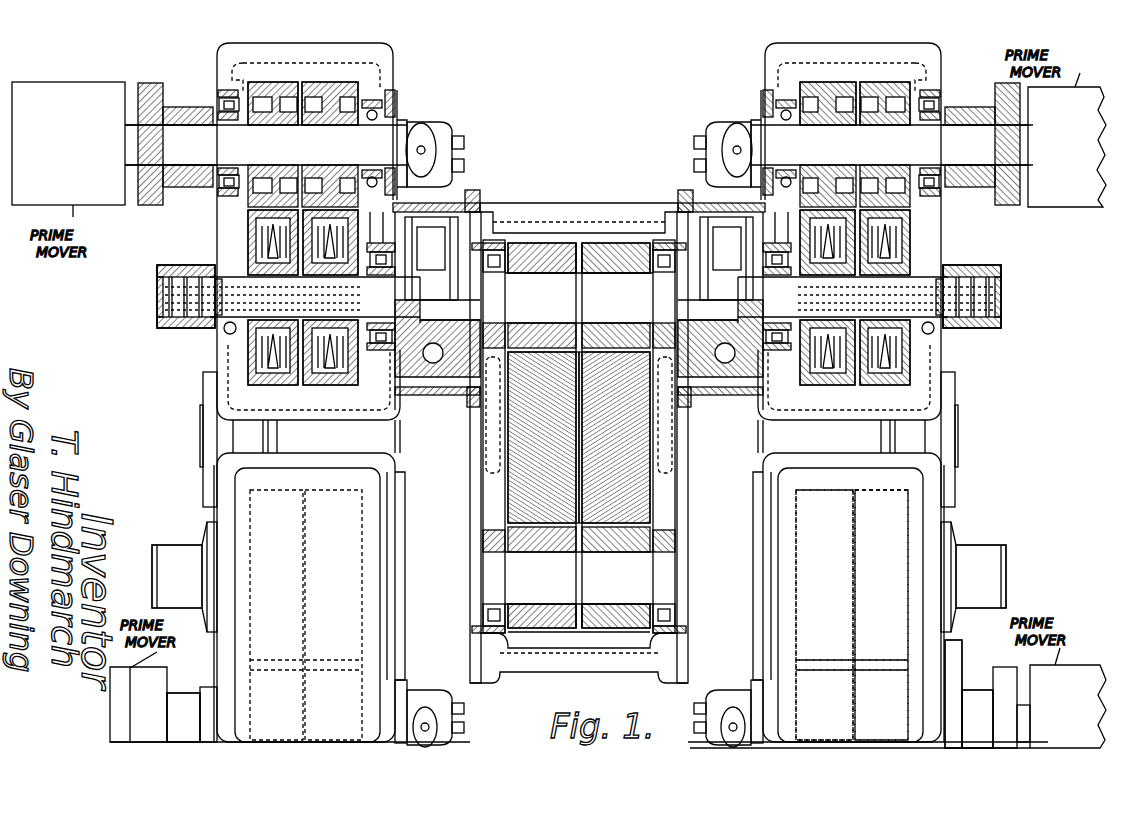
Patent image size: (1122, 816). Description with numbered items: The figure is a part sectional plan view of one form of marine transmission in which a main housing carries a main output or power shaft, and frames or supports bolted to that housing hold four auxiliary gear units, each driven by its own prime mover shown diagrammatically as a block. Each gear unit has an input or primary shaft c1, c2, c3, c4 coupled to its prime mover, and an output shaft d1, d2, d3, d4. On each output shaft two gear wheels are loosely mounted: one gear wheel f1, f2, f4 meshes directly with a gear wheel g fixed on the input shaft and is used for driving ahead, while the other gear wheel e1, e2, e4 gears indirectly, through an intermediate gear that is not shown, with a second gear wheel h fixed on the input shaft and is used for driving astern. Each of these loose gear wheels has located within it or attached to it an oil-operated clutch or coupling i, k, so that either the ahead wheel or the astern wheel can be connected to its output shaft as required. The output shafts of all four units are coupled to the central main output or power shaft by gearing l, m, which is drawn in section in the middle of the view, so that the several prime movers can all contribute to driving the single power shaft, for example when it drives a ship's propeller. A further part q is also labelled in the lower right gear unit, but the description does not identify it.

The second gear wheel h is at (263, 83).
The input or primary shaft c1 is at (182, 135).
The gear wheel g is at (345, 78).
The oil-operated clutch or coupling i is at (260, 237).
The oil-operated clutch or coupling k is at (350, 230).
The output shaft d1 is at (228, 322).
The gear wheel e1 is at (288, 383).
The gear wheel f1 is at (347, 390).
The output shaft d4 is at (172, 557).
The input or primary shaft c4 is at (178, 702).
The gearing l is at (593, 243).
The gearing m is at (638, 502).
The input or primary shaft c2 is at (968, 142).
The output shaft d2 is at (900, 283).
The gear wheel f2 is at (842, 387).
The gear wheel e2 is at (893, 387).
The output shaft d3 is at (965, 552).
The gear wheel f4 is at (813, 572).
The gear wheel e4 is at (885, 585).
The gear q is at (947, 672).
The input or primary shaft c3 is at (973, 698).